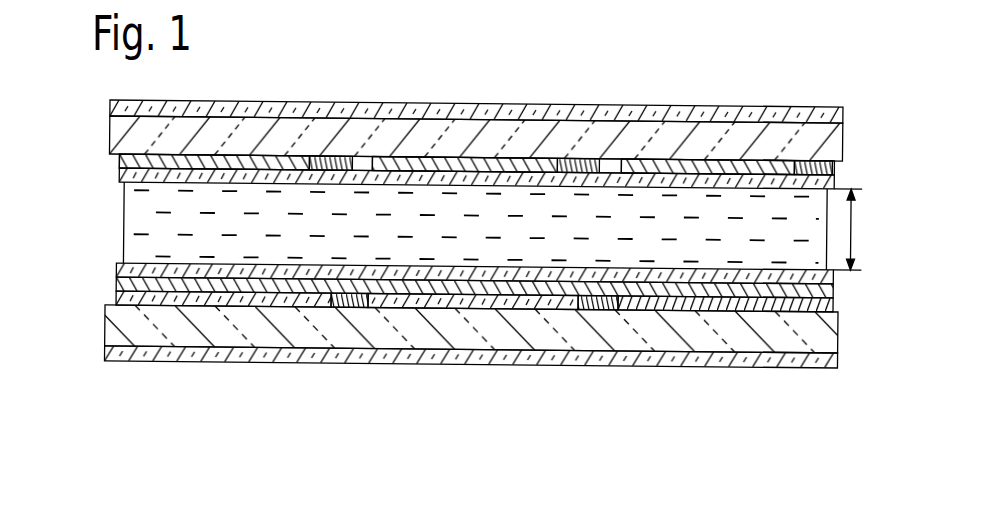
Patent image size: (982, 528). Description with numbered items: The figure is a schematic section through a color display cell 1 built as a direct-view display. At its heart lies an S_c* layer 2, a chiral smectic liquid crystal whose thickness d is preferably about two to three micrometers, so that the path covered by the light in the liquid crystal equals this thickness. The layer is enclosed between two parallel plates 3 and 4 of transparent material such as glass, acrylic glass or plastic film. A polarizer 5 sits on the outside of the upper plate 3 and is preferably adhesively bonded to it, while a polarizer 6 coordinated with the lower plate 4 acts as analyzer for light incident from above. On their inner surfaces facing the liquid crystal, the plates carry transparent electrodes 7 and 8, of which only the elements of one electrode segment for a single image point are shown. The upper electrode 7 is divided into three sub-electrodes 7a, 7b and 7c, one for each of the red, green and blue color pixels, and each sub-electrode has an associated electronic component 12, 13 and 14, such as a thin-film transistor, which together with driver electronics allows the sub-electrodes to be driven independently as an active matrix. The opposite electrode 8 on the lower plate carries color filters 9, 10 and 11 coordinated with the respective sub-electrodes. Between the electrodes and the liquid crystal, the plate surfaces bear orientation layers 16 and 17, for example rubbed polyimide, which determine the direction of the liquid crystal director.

The display cell 1 is at (455, 288).
The S_c* layer 2 is at (125, 225).
The upper plate 3 is at (110, 128).
The lower plate 4 is at (105, 323).
The polarizer 5 is at (110, 105).
The polarizer 6 is at (105, 347).
The transparent electrode 7 is at (446, 125).
The sub-electrode 7a is at (303, 158).
The sub-electrode 7b is at (537, 160).
The sub-electrode 7c is at (712, 160).
The transparent electrode 8 is at (118, 284).
The color filter 9 is at (273, 302).
The color filter 10 is at (483, 302).
The color filter 11 is at (782, 312).
The electronic component 12 is at (348, 161).
The electronic component 13 is at (588, 161).
The electronic component 14 is at (813, 160).
The orientation layer 16 is at (120, 174).
The orientation layer 17 is at (118, 270).